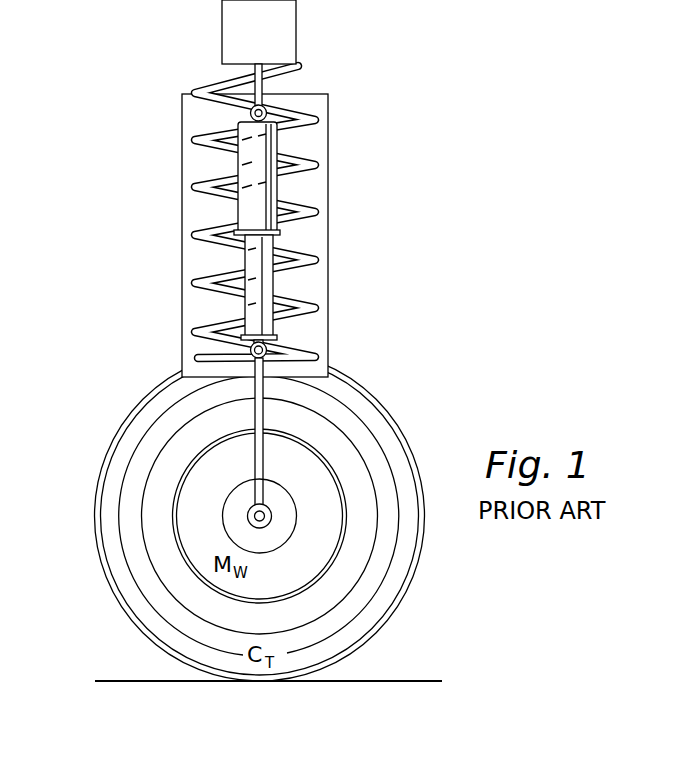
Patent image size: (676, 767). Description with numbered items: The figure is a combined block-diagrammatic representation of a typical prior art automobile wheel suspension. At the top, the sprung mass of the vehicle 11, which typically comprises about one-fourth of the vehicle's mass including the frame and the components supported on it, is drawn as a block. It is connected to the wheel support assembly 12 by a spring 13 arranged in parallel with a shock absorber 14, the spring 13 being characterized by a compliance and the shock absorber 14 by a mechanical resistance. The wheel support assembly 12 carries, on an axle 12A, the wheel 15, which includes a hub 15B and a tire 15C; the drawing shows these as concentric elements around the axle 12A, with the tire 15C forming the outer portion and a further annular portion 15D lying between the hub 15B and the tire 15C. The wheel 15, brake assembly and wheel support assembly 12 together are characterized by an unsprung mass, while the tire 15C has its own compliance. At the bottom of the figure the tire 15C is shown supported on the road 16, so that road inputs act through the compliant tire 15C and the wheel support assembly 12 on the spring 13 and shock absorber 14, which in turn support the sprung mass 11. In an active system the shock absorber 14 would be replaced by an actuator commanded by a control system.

The sprung mass of the vehicle 11 is at (297, 32).
The wheel support assembly 12 is at (264, 462).
The axle 12A is at (261, 518).
The spring 13 is at (318, 163).
The shock absorber 14 is at (305, 211).
The wheel 15 is at (147, 350).
The hub 15B is at (208, 599).
The tire 15C is at (407, 538).
The wheel disc 15D is at (338, 467).
The road 16 is at (163, 683).